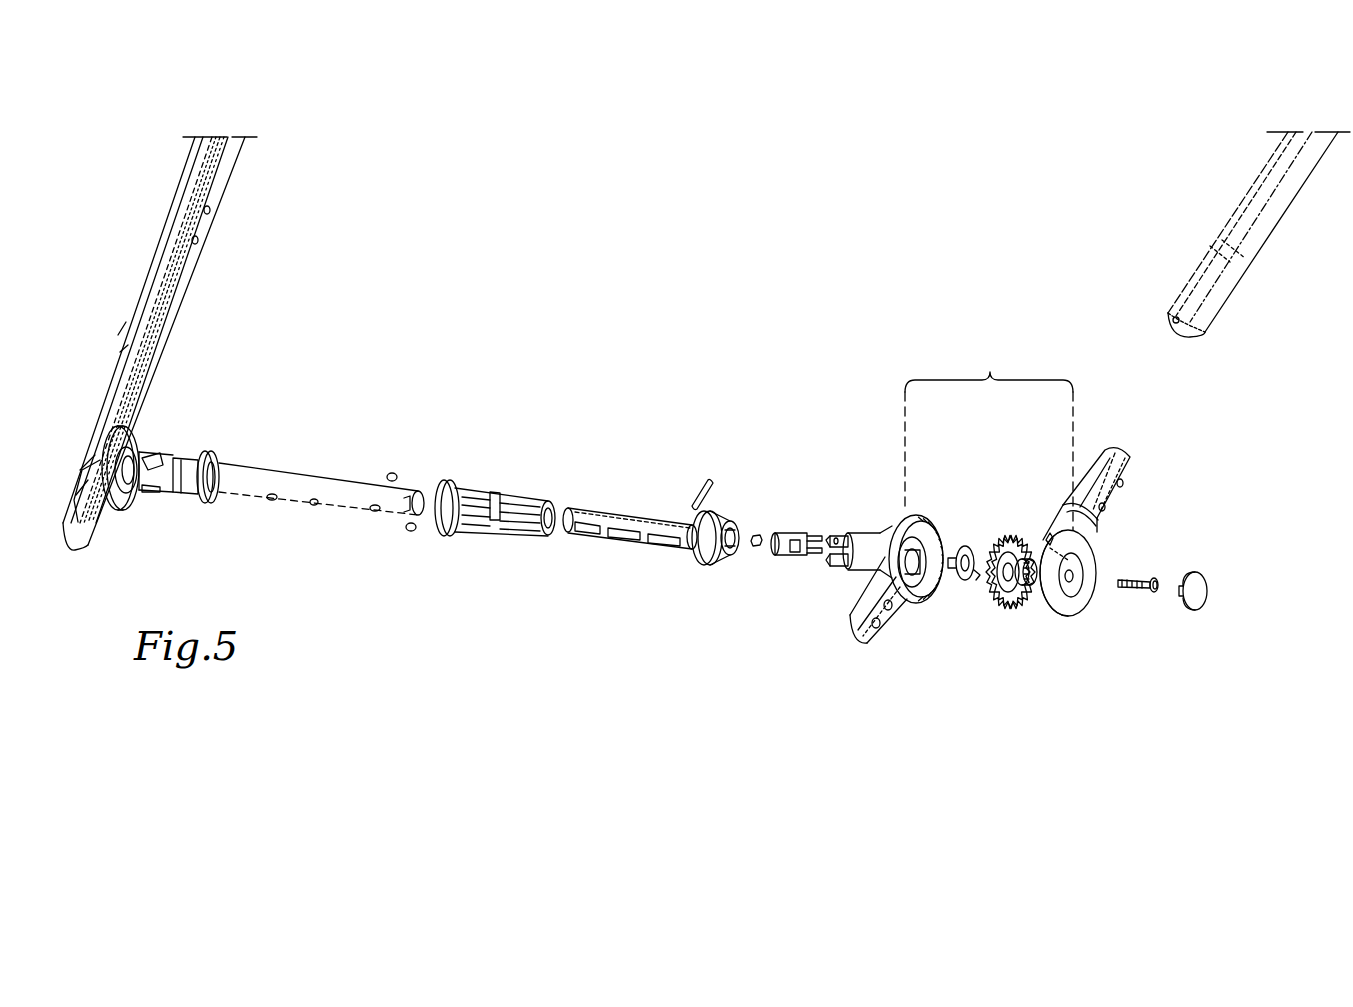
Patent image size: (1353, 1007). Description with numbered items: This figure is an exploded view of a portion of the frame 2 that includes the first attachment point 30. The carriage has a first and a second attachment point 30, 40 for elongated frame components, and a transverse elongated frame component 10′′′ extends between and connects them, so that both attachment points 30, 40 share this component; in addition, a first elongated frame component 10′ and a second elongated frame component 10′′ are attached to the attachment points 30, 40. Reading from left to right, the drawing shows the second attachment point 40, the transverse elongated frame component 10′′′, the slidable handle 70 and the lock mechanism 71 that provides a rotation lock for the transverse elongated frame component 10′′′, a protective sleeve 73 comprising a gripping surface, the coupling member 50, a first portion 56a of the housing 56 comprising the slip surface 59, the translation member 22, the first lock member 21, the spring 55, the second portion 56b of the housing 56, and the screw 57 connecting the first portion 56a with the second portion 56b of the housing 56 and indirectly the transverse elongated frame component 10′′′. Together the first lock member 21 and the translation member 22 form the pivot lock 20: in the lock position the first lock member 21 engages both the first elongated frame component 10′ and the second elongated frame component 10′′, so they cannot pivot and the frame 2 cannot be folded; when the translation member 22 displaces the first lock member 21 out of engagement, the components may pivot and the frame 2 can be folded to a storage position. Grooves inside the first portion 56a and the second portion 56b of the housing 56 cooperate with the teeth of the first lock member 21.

The frame 2 is at (824, 288).
The first elongated frame component 10′ is at (1108, 490).
The second elongated frame component 10′′ is at (885, 610).
The transverse elongated frame component 10′′′ is at (276, 487).
The pivot lock 20 is at (923, 561).
The first lock member 21 is at (1010, 532).
The translation member 22 is at (963, 578).
The first attachment point 30 is at (1006, 446).
The second attachment point 40 is at (142, 431).
The coupling member 50 is at (785, 540).
The spring 55 is at (1032, 585).
The housing 56 is at (989, 435).
The first portion of the housing 56a is at (915, 520).
The second portion of the housing 56b is at (1080, 530).
The screw 57 is at (1137, 590).
The slip surface 59 is at (935, 522).
The slidable handle 70 is at (470, 500).
The lock mechanism 71 is at (608, 520).
The protective sleeve 73 is at (718, 525).